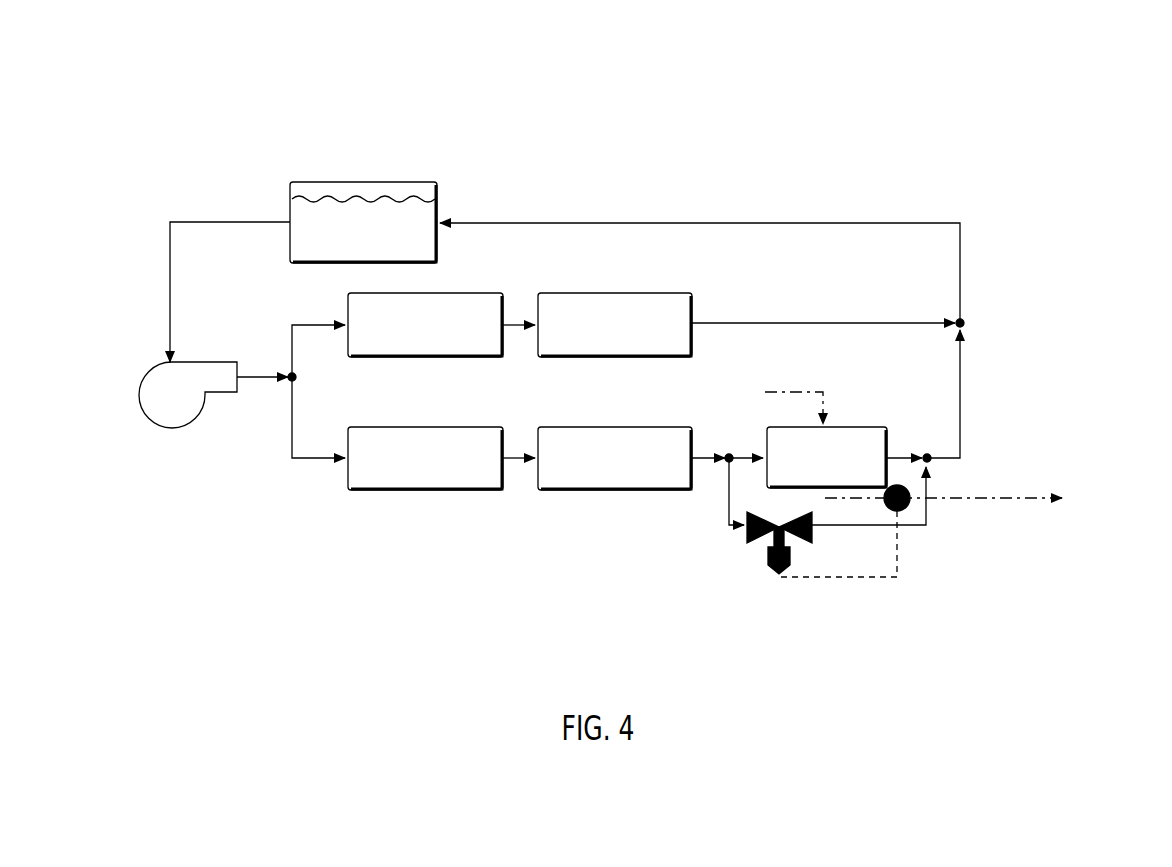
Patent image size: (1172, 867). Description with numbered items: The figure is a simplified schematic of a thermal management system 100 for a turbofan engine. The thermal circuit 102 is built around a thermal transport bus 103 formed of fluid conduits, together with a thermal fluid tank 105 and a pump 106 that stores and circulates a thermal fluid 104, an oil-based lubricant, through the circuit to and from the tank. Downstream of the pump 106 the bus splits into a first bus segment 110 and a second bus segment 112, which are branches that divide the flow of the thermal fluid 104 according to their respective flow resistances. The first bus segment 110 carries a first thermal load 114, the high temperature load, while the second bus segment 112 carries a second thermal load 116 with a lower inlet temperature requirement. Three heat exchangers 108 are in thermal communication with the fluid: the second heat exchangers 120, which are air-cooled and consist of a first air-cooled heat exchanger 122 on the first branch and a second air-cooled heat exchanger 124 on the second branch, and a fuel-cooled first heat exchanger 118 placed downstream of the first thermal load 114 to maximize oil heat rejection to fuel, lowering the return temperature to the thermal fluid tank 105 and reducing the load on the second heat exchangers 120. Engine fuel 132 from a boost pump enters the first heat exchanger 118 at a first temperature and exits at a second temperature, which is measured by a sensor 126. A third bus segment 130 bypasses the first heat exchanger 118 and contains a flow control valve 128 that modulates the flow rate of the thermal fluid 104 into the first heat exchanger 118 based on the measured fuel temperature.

The thermal management system 100 is at (1083, 150).
The thermal circuit 102 is at (700, 233).
The thermal transport bus 103 is at (885, 223).
The thermal fluid 104 is at (343, 236).
The thermal fluid tank 105 is at (335, 193).
The pump 106 is at (152, 407).
The heat exchangers 108 is at (617, 391).
The first bus segment 110 is at (308, 463).
The second bus segment 112 is at (300, 320).
The first thermal load 114 is at (594, 475).
The second thermal load 116 is at (594, 340).
The first heat exchanger 118 is at (785, 475).
The second heat exchangers 120 is at (425, 391).
The first air-cooled heat exchanger 122 is at (367, 475).
The second air-cooled heat exchanger 124 is at (367, 340).
The sensor 126 is at (908, 512).
The flow control valve 128 is at (761, 553).
The third bus segment 130 is at (726, 506).
The engine fuel 132 is at (762, 405).